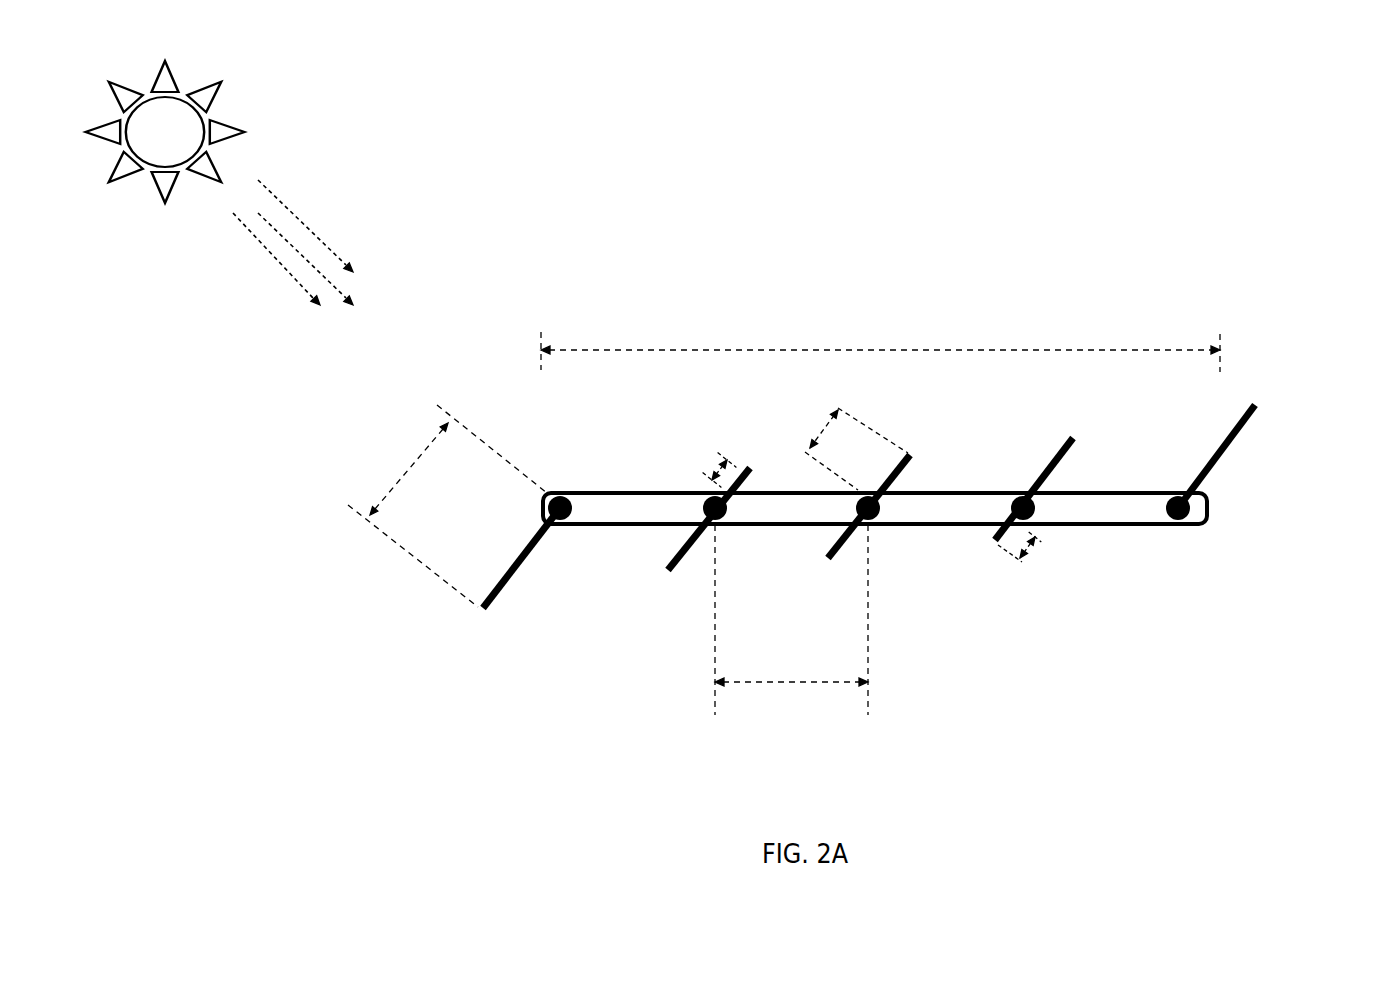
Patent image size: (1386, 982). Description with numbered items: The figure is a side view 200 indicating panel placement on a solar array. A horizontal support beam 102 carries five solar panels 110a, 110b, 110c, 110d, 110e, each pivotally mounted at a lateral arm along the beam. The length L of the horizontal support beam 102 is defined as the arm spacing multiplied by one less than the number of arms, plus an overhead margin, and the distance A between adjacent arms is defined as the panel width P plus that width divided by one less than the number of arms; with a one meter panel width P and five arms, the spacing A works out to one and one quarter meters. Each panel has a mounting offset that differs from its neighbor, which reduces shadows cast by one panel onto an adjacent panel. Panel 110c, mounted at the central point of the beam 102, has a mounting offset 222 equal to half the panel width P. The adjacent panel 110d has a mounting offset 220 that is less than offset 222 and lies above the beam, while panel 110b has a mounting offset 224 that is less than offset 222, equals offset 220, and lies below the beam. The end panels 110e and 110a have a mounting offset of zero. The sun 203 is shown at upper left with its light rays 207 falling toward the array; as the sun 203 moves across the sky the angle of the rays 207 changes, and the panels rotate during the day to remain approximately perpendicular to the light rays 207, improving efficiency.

The side view 200 is at (1330, 168).
The sun 203 is at (182, 142).
The light rays 207 is at (318, 220).
The horizontal support beam 102 is at (943, 500).
The solar panel 110a is at (1217, 460).
The solar panel 110b is at (1065, 457).
The solar panel 110c is at (845, 553).
The solar panel 110d is at (703, 548).
The solar panel 110e is at (522, 568).
The mounting offset 220 is at (717, 473).
The mounting offset 222 is at (822, 435).
The mounting offset 224 is at (1040, 545).
The length of the horizontal support beam L is at (863, 348).
The spacing between lateral arms A is at (823, 680).
The panel width P is at (408, 468).